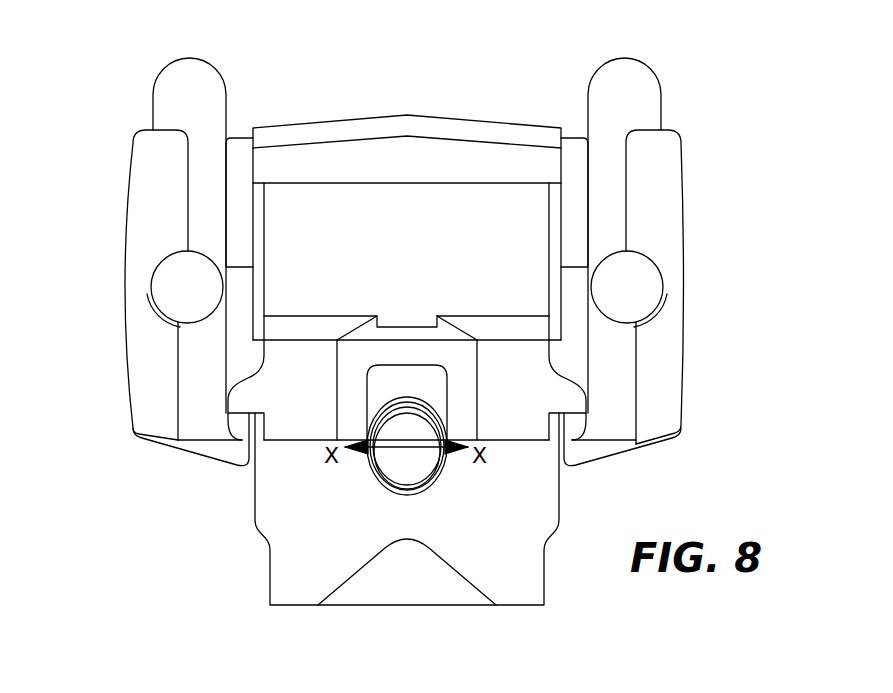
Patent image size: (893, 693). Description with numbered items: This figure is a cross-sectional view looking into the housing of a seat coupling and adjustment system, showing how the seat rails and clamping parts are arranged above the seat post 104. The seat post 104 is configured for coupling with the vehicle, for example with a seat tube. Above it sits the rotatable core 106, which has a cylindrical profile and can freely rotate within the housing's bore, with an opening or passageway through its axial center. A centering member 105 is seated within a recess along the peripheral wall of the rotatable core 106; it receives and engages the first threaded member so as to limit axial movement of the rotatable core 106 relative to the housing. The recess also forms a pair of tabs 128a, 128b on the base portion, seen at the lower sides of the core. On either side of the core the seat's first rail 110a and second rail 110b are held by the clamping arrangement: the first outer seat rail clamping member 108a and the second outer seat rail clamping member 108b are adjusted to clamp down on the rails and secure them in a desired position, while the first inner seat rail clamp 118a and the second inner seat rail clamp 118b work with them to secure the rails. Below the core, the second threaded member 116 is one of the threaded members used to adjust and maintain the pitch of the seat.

The seat post 104 is at (278, 582).
The centering member 105 is at (408, 348).
The rotatable core 106 is at (468, 222).
The first outer seat rail clamping member 108a is at (658, 178).
The second outer seat rail clamping member 108b is at (148, 190).
The first rail 110a is at (616, 88).
The second rail 110b is at (184, 86).
The second threaded member 116 is at (398, 472).
The first inner seat rail clamp 118a is at (604, 428).
The second inner seat rail clamp 118b is at (192, 382).
The tab 128a is at (512, 412).
The tab 128b is at (249, 425).